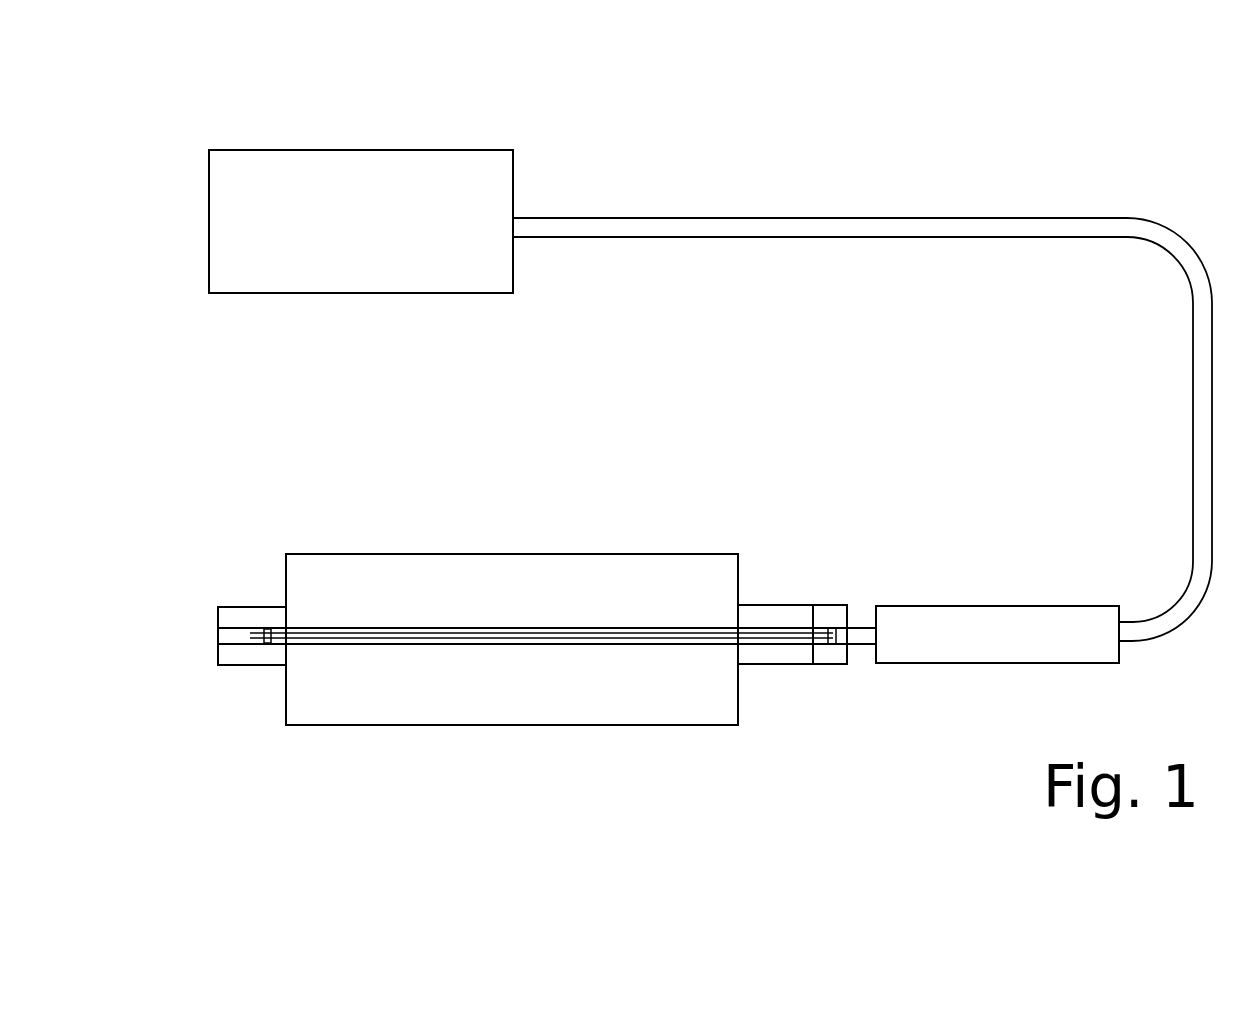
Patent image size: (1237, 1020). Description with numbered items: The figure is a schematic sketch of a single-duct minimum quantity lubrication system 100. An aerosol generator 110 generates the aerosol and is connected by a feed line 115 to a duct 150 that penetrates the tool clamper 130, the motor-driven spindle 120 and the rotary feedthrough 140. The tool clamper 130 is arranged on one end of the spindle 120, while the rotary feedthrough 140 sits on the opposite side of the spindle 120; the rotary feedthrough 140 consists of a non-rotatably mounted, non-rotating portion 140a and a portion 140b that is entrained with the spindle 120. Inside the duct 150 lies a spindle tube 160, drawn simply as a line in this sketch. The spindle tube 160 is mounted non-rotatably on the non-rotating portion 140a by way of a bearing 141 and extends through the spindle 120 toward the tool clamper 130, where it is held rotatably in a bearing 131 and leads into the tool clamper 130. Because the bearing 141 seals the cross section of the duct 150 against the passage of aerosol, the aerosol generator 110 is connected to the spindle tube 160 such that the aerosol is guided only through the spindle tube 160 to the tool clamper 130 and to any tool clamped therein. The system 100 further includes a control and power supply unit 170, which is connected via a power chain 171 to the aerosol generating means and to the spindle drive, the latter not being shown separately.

The lubrication system 100 is at (892, 153).
The aerosol generator 110 is at (995, 648).
The feed line 115 is at (863, 637).
The spindle 120 is at (585, 575).
The tool clamper 130 is at (250, 618).
The bearing 131 is at (267, 640).
The rotary feedthrough 140 is at (755, 672).
The non-rotating portion 140a is at (830, 612).
The entrained portion 140b is at (770, 618).
The bearing 141 is at (834, 628).
The duct 150 is at (405, 645).
The spindle tube 160 is at (490, 630).
The control and power supply unit 170 is at (372, 168).
The power chain 171 is at (1046, 230).